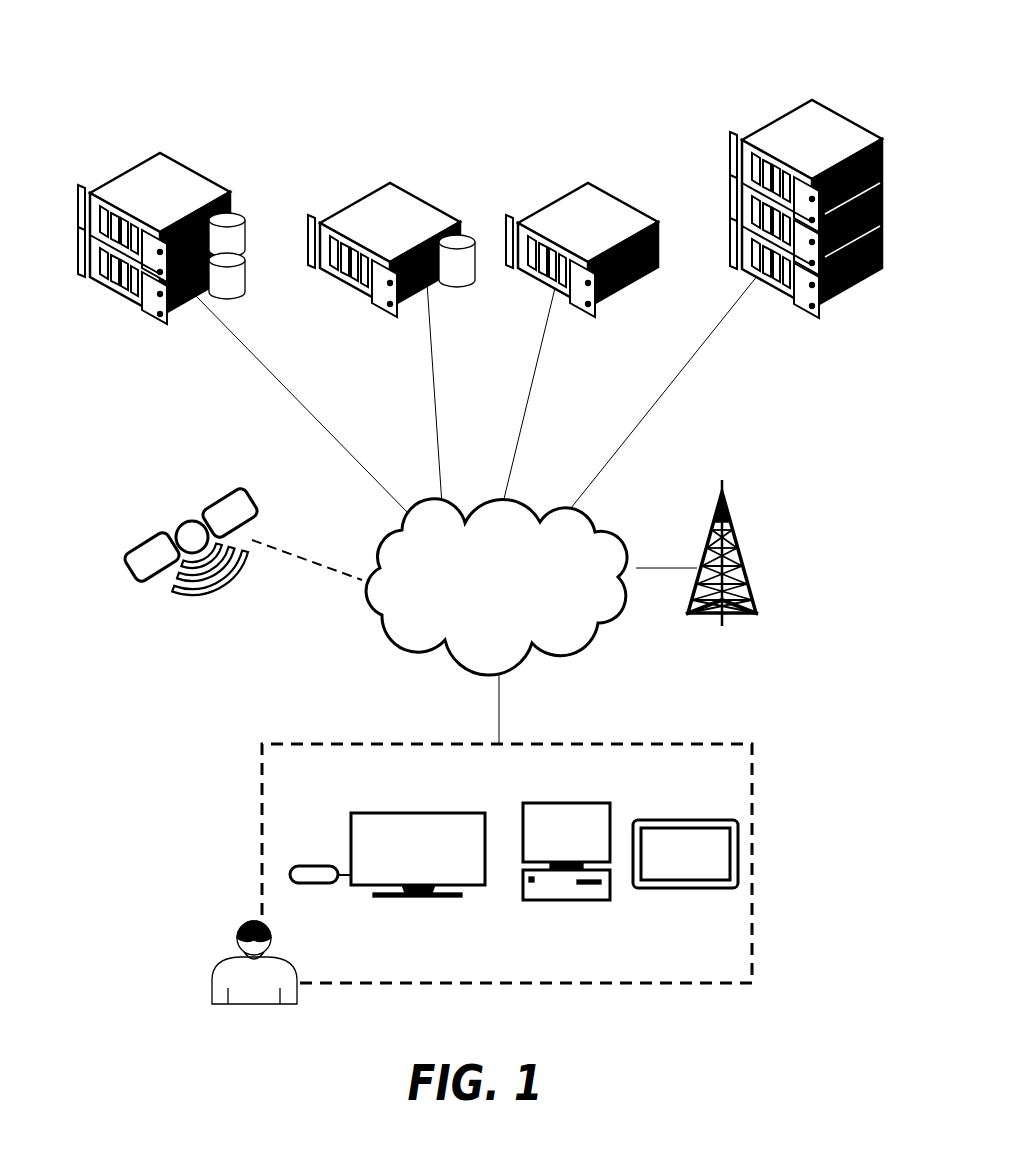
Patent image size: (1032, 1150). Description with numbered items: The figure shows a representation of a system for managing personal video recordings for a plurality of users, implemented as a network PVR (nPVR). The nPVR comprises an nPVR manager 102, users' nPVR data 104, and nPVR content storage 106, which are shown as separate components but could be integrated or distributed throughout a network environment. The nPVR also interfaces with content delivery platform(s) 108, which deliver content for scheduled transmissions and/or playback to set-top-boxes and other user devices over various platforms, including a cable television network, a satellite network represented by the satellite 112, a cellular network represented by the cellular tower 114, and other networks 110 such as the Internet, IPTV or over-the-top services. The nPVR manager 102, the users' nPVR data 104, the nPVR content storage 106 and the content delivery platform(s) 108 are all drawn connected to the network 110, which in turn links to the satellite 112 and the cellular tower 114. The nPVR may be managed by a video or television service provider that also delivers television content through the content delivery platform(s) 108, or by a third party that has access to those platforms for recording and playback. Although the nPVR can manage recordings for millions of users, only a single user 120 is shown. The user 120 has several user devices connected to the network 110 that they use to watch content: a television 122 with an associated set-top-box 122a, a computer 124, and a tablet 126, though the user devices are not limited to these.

The nPVR manager 102 is at (563, 170).
The users' nPVR data 104 is at (360, 170).
The nPVR content storage 106 is at (133, 143).
The content delivery platform(s) 108 is at (793, 91).
The network 110 is at (479, 590).
The satellite 112 is at (130, 548).
The cellular tower 114 is at (733, 538).
The user 120 is at (218, 980).
The television 122 is at (410, 813).
The set-top-box (STB) 122a is at (287, 872).
The computer 124 is at (610, 803).
The tablet 126 is at (742, 848).